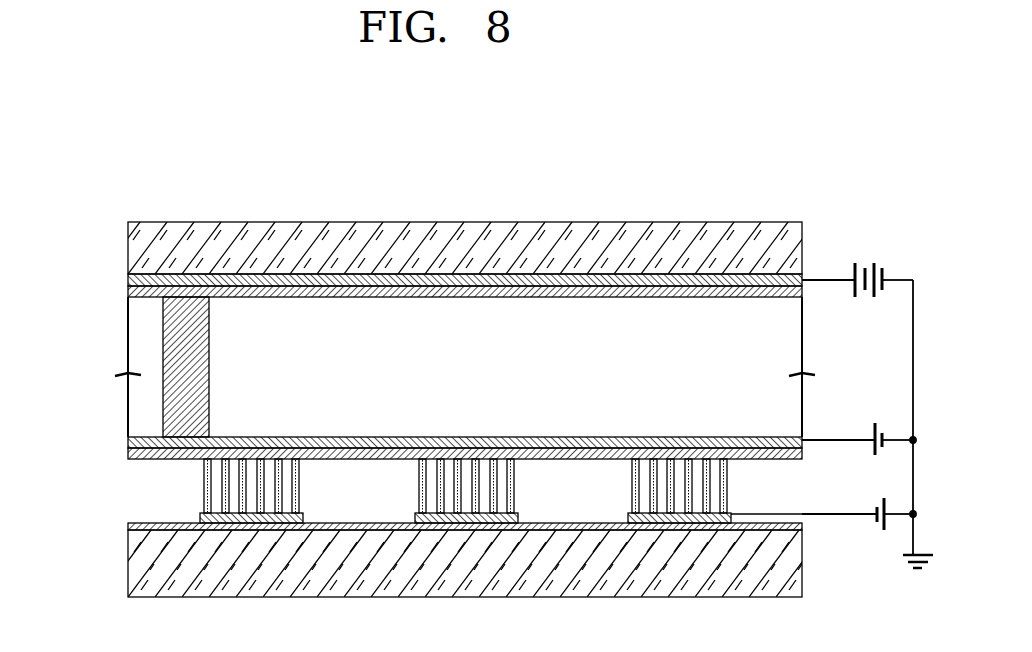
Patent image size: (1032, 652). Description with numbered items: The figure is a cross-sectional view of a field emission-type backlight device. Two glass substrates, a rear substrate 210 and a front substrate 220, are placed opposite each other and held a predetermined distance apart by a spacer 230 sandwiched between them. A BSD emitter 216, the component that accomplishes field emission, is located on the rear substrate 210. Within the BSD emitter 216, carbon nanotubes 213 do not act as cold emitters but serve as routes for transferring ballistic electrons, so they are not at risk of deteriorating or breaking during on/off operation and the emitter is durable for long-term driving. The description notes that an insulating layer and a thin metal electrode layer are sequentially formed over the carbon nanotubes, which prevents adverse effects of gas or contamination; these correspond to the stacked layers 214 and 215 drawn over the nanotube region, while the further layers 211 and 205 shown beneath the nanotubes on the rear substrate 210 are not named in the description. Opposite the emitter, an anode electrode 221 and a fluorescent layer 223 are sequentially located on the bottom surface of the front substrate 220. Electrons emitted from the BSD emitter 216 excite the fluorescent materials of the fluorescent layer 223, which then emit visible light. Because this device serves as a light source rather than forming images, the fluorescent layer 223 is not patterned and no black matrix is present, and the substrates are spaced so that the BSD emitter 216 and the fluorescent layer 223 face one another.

The front substrate 220 is at (138, 243).
The anode electrode 221 is at (128, 279).
The fluorescent layer 223 is at (128, 292).
The spacer 230 is at (170, 347).
The insulating layer 214 is at (128, 437).
The electrode 215 is at (128, 450).
The BSD emitter 216 is at (463, 420).
The carbon nanotubes 213 is at (205, 478).
The cathode electrodes 211 is at (202, 517).
The insulating layer 205 is at (133, 527).
The rear substrate 210 is at (138, 580).